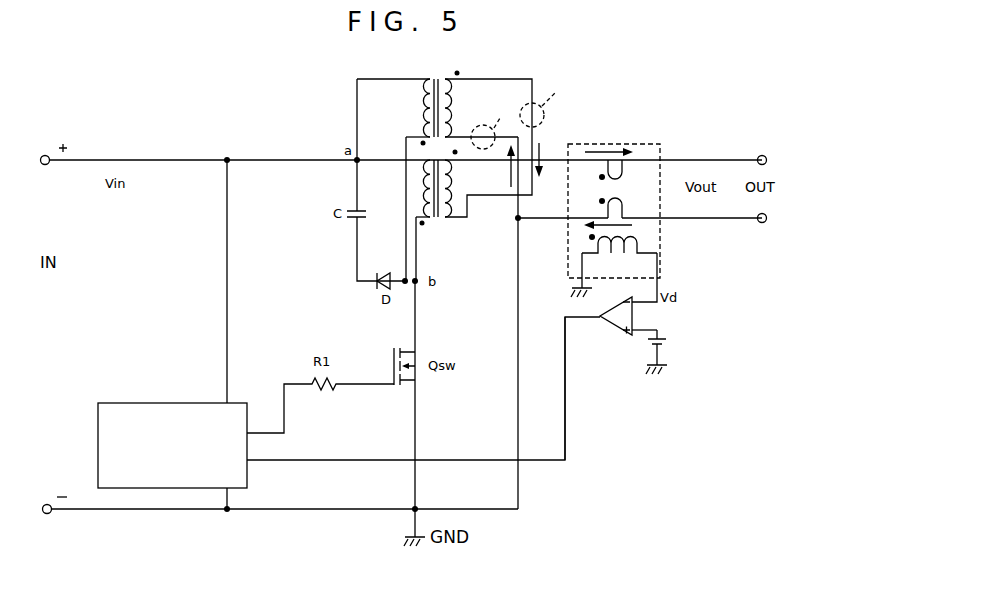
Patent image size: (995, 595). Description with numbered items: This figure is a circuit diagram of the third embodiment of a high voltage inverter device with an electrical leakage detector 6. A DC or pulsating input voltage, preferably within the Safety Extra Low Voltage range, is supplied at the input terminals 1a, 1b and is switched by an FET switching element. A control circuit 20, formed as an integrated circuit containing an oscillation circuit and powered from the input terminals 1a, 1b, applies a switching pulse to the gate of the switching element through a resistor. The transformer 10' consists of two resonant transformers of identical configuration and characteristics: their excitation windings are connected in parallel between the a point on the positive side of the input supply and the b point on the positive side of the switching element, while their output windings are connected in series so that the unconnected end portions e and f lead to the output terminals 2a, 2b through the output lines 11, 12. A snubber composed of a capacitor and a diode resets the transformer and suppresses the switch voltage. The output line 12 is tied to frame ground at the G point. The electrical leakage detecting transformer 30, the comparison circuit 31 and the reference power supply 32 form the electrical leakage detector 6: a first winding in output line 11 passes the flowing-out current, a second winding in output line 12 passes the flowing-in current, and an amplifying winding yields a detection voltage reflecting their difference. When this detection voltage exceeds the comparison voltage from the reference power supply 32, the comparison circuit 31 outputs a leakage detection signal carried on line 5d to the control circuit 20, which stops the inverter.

The input terminal 1a is at (44, 155).
The input terminal 1b is at (45, 514).
The output terminal 2a is at (762, 155).
The output terminal 2b is at (762, 223).
The detection signal line 5d is at (579, 388).
The electrical leakage detector 6 is at (650, 400).
The transformer 10' is at (461, 179).
The output line 11 is at (557, 158).
The output line 12 is at (545, 222).
The control circuit 20 is at (170, 403).
The electrical leakage detecting transformer 30 is at (620, 144).
The comparison circuit 31 is at (611, 327).
The reference power supply 32 is at (667, 341).